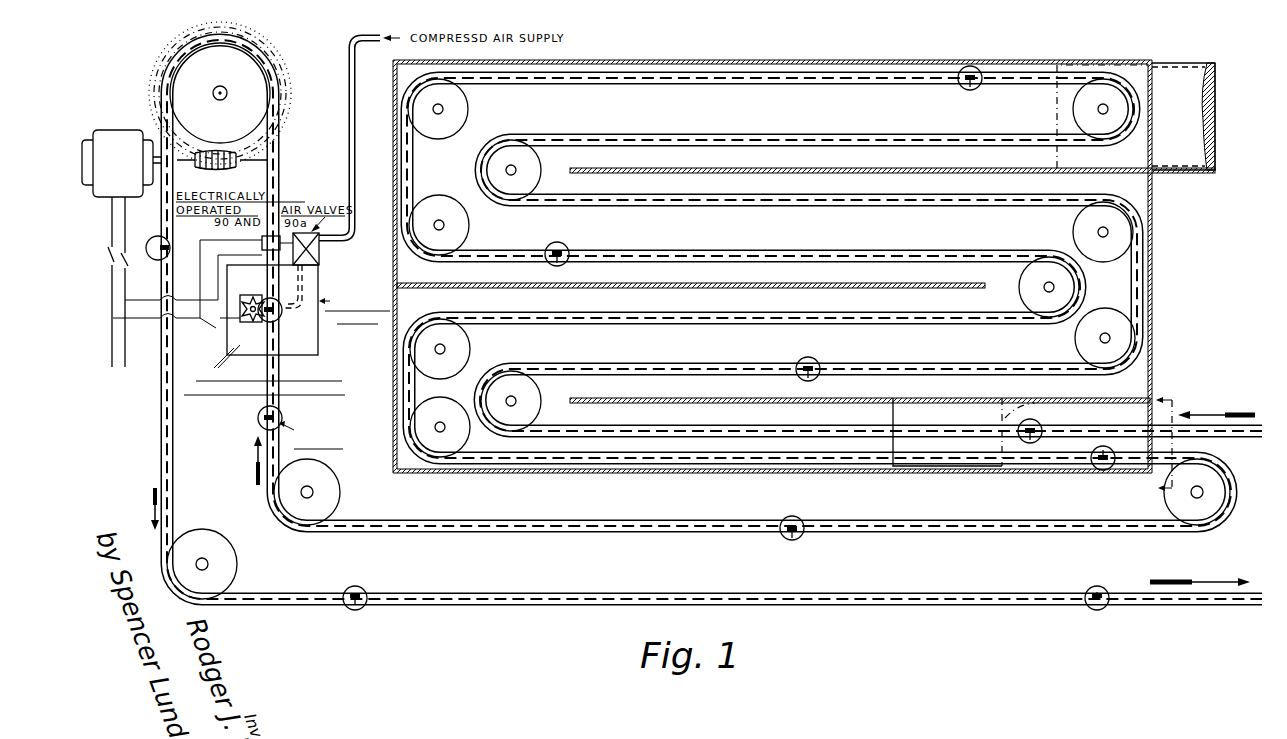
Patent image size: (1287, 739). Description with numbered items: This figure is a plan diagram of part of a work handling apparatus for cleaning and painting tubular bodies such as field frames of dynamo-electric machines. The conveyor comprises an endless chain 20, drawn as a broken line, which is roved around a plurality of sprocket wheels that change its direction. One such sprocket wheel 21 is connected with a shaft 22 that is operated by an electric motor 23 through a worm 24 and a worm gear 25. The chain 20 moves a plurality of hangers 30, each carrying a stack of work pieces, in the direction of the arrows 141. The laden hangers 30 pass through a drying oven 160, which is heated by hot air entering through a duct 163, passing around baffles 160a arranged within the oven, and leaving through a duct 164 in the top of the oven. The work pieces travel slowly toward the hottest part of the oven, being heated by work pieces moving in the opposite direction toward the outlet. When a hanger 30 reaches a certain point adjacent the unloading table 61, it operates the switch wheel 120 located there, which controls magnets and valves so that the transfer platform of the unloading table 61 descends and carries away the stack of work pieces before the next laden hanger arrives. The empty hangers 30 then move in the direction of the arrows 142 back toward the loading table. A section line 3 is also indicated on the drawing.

The section line 3- 3 is at (1153, 445).
The endless chain 20 is at (549, 368).
The sprocket wheel 21 is at (178, 83).
The shaft 22 is at (220, 86).
The electric motor 23 is at (106, 130).
The worm 24 is at (214, 151).
The worm gear 25 is at (278, 60).
The hanger 30 is at (168, 248).
The unloading table 61 is at (320, 286).
The switch wheel 120 is at (253, 296).
The arrows 141 is at (256, 462).
The arrows 142 is at (152, 520).
The drying oven 160 is at (874, 60).
The baffles 160a is at (782, 173).
The duct 163 is at (1187, 63).
The duct 164 is at (1033, 403).